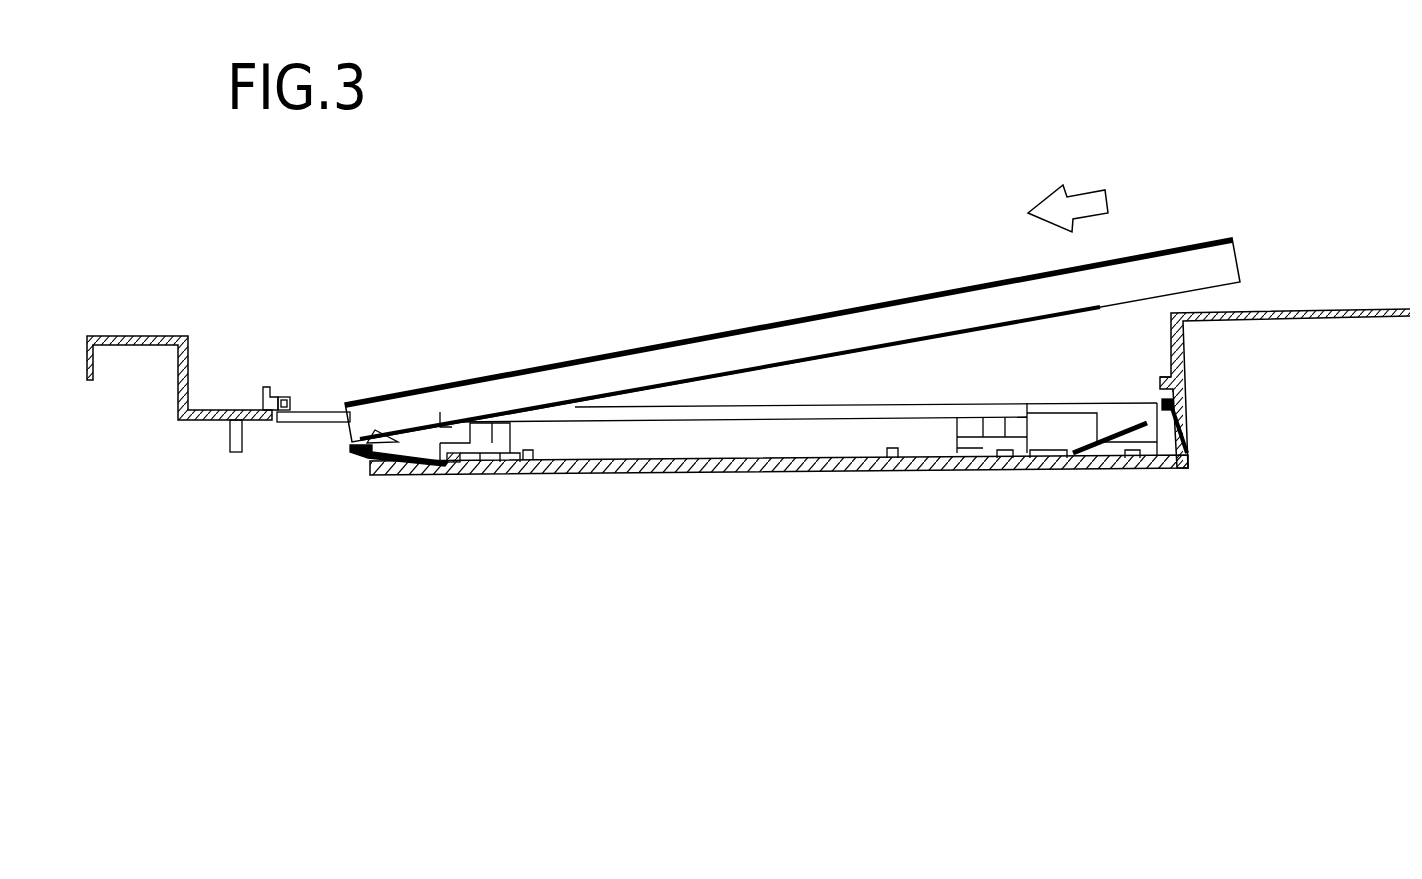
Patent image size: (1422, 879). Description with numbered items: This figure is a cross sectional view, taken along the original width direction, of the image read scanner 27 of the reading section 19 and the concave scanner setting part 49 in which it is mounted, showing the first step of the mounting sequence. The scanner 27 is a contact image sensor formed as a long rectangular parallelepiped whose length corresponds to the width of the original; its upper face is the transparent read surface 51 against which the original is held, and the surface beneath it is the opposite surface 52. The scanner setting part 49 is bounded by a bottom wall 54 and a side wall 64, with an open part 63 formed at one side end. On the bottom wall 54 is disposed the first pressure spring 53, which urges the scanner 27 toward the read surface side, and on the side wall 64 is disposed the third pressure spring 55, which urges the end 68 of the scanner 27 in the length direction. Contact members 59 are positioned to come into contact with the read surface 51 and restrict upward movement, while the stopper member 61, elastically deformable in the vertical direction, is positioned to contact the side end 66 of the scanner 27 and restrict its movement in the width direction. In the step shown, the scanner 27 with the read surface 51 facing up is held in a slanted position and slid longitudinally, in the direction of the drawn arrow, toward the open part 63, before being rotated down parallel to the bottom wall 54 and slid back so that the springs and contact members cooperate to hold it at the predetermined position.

The reading section 19 is at (880, 446).
The image read scanner 27 is at (720, 350).
The scanner setting part 49 is at (703, 445).
The read surface 51 is at (825, 333).
The opposite surface 52 is at (850, 353).
The first pressure spring 53 is at (398, 475).
The bottom wall 54 is at (768, 453).
The third pressure spring 55 is at (1180, 402).
The contact member 59 is at (287, 397).
The stopper member 61 is at (253, 409).
The open part 63 is at (672, 436).
The side wall 64 is at (1185, 398).
The side end 66 is at (348, 430).
The end of the scanner 68 is at (1238, 260).